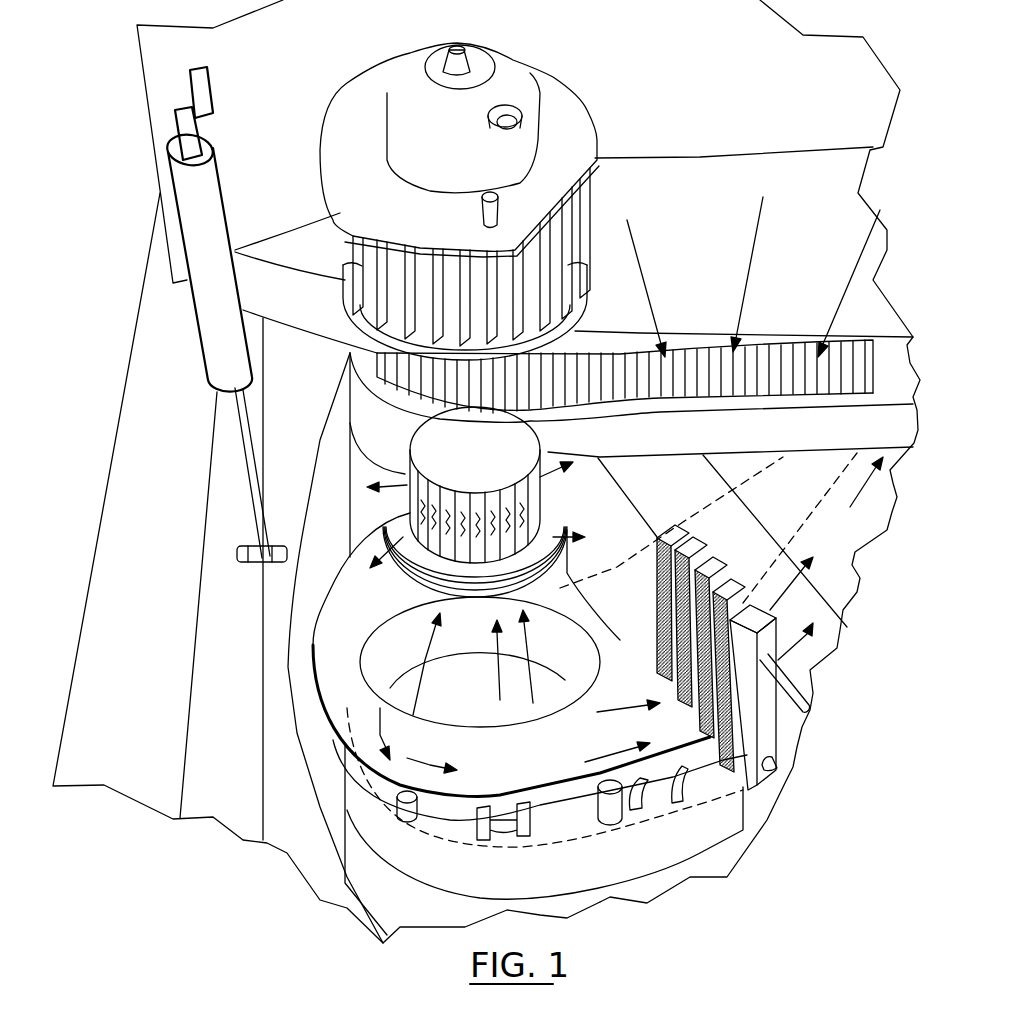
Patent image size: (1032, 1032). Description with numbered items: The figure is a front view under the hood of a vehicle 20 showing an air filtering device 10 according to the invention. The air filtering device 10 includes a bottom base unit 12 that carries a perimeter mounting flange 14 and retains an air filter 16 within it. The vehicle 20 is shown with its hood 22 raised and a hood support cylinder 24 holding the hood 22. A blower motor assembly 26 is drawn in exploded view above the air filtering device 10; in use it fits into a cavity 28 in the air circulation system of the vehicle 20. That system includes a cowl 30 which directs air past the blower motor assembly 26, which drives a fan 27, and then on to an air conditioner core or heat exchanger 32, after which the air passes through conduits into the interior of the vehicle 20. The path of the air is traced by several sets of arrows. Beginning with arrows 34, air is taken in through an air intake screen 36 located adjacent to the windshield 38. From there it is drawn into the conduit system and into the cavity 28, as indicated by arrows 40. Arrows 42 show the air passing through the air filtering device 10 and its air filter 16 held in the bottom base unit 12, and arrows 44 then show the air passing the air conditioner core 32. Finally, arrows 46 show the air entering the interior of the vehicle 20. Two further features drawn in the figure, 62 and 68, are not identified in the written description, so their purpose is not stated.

The air filtering device 10 is at (408, 420).
The bottom base unit 12 is at (540, 583).
The perimeter mounting flange 14 is at (428, 600).
The air filter 16 is at (390, 510).
The vehicle 20 is at (823, 214).
The hood 22 is at (145, 93).
The hood support cylinder 24 is at (213, 313).
The blower motor assembly 26 is at (510, 73).
The fan 27 is at (340, 305).
The cavity 28 is at (378, 640).
The cowl 30 is at (668, 432).
The air conditioner core 32 is at (690, 557).
The arrows 34 is at (638, 255).
The air intake screen 36 is at (787, 352).
The windshield 38 is at (717, 307).
The arrows 40 is at (497, 648).
The arrows 42 is at (403, 485).
The arrows 44 is at (390, 737).
The arrows 46 is at (873, 472).
The fan wheel 62 is at (567, 247).
The air inlet opening 68 is at (478, 668).